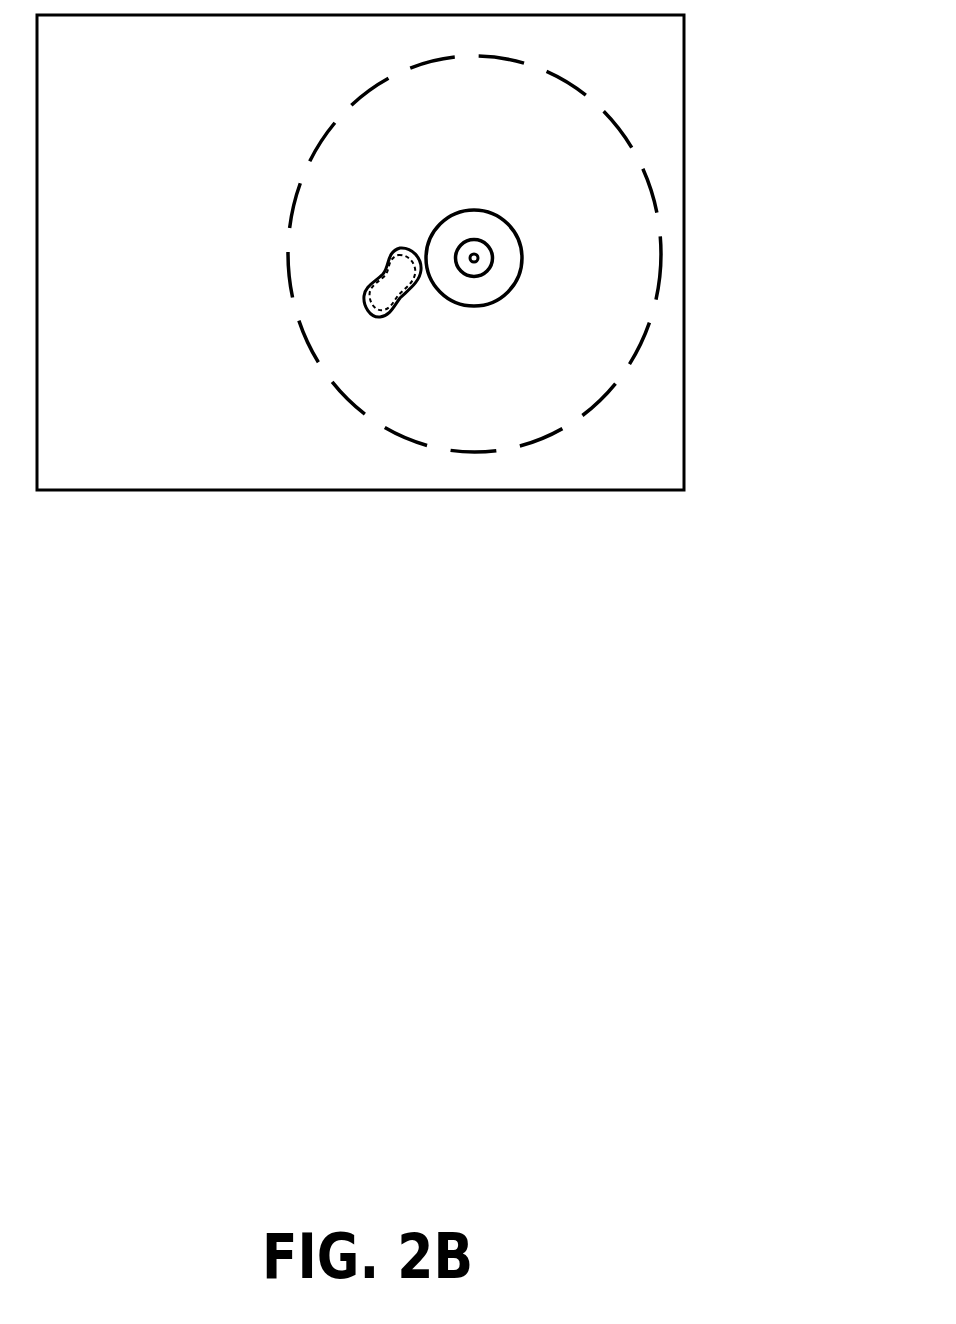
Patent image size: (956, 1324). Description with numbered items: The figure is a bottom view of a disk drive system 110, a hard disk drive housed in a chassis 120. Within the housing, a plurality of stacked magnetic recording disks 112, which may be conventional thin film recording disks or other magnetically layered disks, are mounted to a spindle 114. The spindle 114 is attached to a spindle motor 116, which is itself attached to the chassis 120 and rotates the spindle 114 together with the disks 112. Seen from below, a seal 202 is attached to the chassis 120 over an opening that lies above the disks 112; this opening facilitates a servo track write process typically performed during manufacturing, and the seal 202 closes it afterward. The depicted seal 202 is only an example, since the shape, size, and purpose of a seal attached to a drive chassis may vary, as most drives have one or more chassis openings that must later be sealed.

The disk drive system 110 is at (423, 246).
The magnetic recording disks 112 is at (347, 110).
The spindle 114 is at (476, 238).
The spindle motor 116 is at (446, 212).
The chassis 120 is at (113, 64).
The seal 202 is at (388, 318).